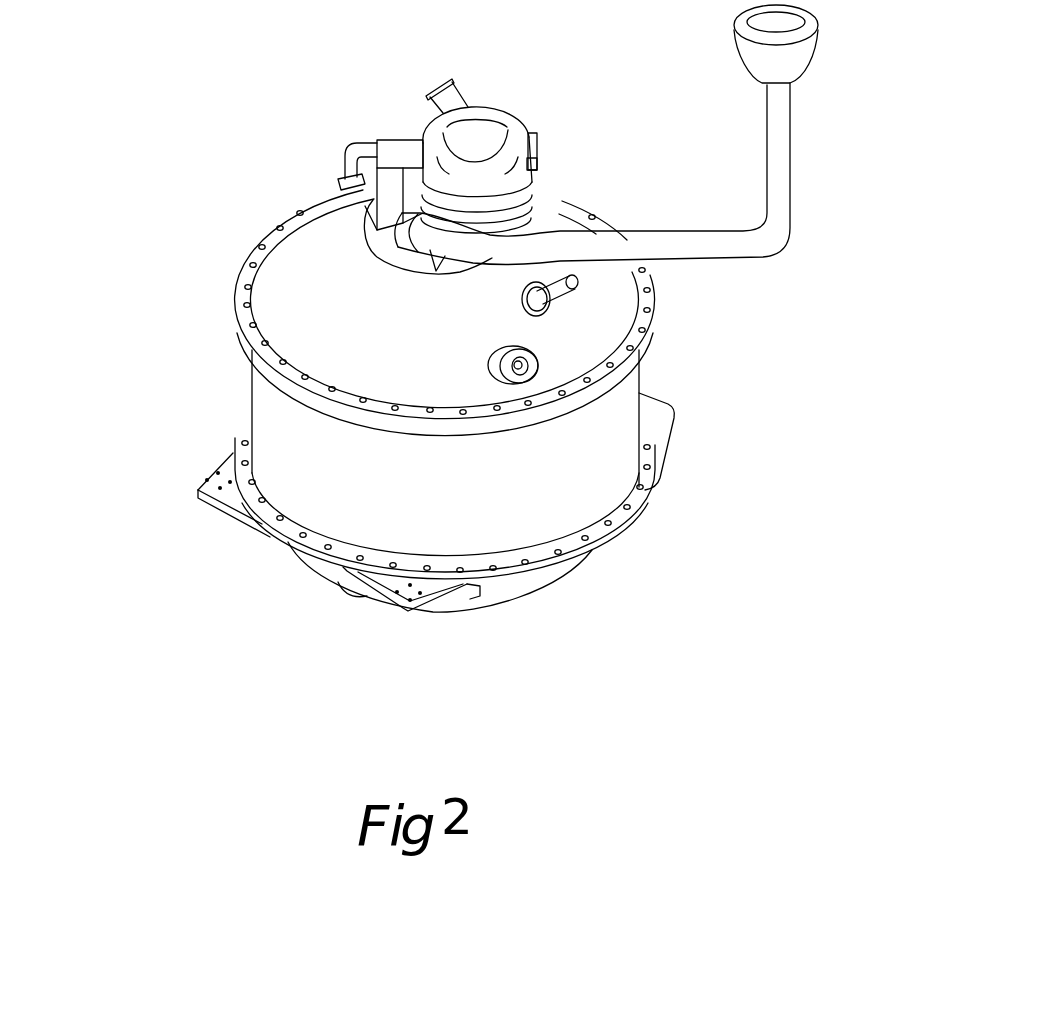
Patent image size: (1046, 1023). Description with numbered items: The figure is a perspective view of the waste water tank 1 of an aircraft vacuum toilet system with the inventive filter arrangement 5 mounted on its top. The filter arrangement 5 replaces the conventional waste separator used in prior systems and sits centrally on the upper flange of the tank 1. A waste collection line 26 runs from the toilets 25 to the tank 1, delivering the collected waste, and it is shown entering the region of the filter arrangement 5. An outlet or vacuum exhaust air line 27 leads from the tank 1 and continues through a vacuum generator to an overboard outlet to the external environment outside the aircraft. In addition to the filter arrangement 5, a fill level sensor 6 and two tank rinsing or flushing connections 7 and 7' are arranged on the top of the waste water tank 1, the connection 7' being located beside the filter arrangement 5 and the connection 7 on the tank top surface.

The waste water tank 1 is at (293, 417).
The filter arrangement 5 is at (556, 155).
The fill level sensor 6 is at (560, 365).
The tank rinsing or flushing connection 7 is at (666, 286).
The tank rinsing or flushing connection 7' is at (272, 159).
The toilets 25 is at (733, 33).
The waste collection line 26 is at (792, 176).
The vacuum exhaust air line 27 is at (455, 90).